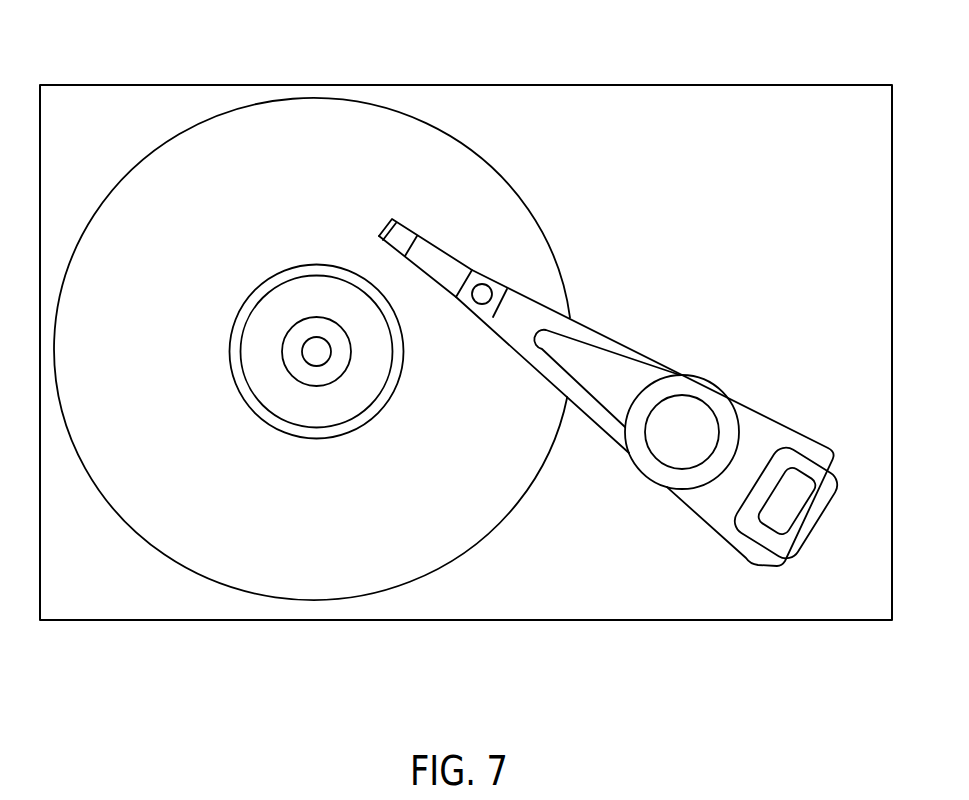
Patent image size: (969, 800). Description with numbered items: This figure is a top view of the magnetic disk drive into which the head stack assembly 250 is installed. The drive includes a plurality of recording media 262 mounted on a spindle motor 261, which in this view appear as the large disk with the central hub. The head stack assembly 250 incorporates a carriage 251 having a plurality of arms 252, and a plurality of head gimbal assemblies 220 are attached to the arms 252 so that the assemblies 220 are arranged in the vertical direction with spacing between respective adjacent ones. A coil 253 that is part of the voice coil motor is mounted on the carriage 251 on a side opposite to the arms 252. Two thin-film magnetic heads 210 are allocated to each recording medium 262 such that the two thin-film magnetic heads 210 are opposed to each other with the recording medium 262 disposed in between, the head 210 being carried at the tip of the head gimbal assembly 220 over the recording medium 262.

The thin-film magnetic head 210 is at (403, 225).
The head gimbal assembly 220 is at (448, 290).
The head stack assembly 250 is at (685, 515).
The carriage 251 is at (692, 374).
The arm 252 is at (598, 430).
The coil 253 is at (818, 522).
The spindle motor 261 is at (315, 365).
The recording medium 262 is at (220, 587).